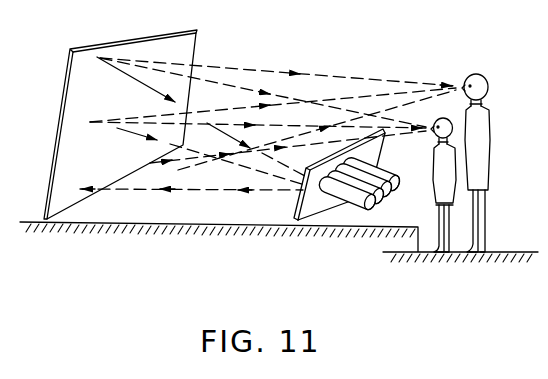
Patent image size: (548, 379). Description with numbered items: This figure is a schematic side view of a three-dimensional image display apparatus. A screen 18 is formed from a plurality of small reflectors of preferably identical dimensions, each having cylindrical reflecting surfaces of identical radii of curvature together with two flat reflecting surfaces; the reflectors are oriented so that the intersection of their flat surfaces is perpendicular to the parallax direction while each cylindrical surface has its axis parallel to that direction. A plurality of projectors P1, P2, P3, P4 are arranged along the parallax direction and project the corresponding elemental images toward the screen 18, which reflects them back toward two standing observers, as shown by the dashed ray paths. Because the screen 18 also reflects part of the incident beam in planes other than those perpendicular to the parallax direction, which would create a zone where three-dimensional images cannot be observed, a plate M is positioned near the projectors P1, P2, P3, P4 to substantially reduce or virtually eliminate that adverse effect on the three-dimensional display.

The screen 18 is at (65, 117).
The plate M is at (298, 213).
The projector P1 is at (352, 206).
The projector P2 is at (382, 200).
The projector P3 is at (392, 191).
The projector P4 is at (400, 182).